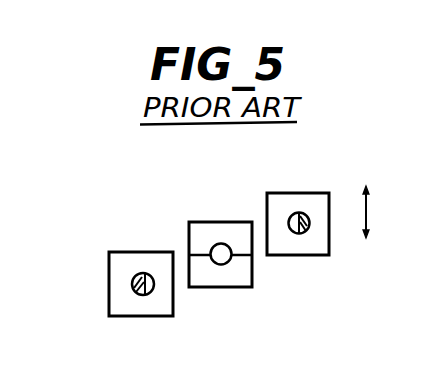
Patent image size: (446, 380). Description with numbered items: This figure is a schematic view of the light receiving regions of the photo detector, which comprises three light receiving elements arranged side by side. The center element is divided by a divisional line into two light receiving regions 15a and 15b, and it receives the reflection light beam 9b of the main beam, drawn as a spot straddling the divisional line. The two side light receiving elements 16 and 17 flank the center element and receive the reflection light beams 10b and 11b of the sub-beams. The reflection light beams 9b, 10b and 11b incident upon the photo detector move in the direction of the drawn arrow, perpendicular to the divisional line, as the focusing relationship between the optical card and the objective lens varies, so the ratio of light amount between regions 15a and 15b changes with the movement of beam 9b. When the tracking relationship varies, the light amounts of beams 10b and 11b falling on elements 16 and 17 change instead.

The side light receiving element 16 is at (118, 257).
The reflection light beam 10b is at (133, 284).
The light receiving region 15a is at (195, 223).
The light receiving region 15b is at (225, 277).
The reflection light beam 9b is at (223, 244).
The side light receiving element 17 is at (310, 242).
The reflection light beam 11b is at (306, 215).